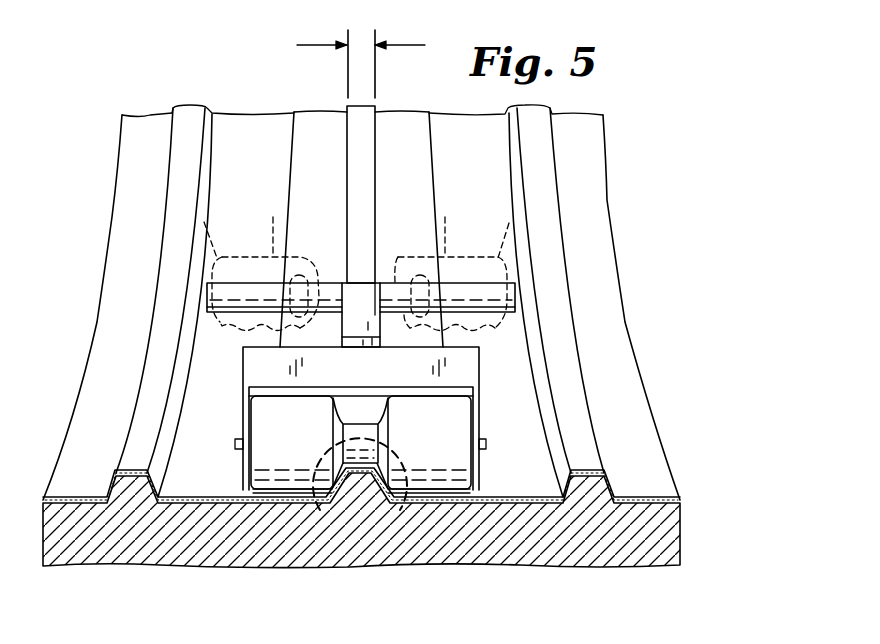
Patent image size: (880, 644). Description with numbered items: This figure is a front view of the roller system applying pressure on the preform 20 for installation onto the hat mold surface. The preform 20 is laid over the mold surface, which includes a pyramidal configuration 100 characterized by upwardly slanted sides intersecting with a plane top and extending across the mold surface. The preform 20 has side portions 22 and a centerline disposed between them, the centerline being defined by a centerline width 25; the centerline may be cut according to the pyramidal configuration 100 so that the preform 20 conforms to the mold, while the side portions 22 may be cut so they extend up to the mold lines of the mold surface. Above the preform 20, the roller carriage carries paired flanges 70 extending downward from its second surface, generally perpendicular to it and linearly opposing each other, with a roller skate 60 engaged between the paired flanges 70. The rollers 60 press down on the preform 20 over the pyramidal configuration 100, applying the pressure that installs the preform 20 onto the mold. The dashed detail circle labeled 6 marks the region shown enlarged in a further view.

The detail area shown in FIG. 6 is at (398, 514).
The preform 20 is at (405, 110).
The side portions 22 is at (317, 117).
The centerline width 25 is at (305, 45).
The roller skate 60 is at (452, 500).
The paired flanges 70 is at (246, 422).
The pyramidal configuration 100 is at (578, 392).